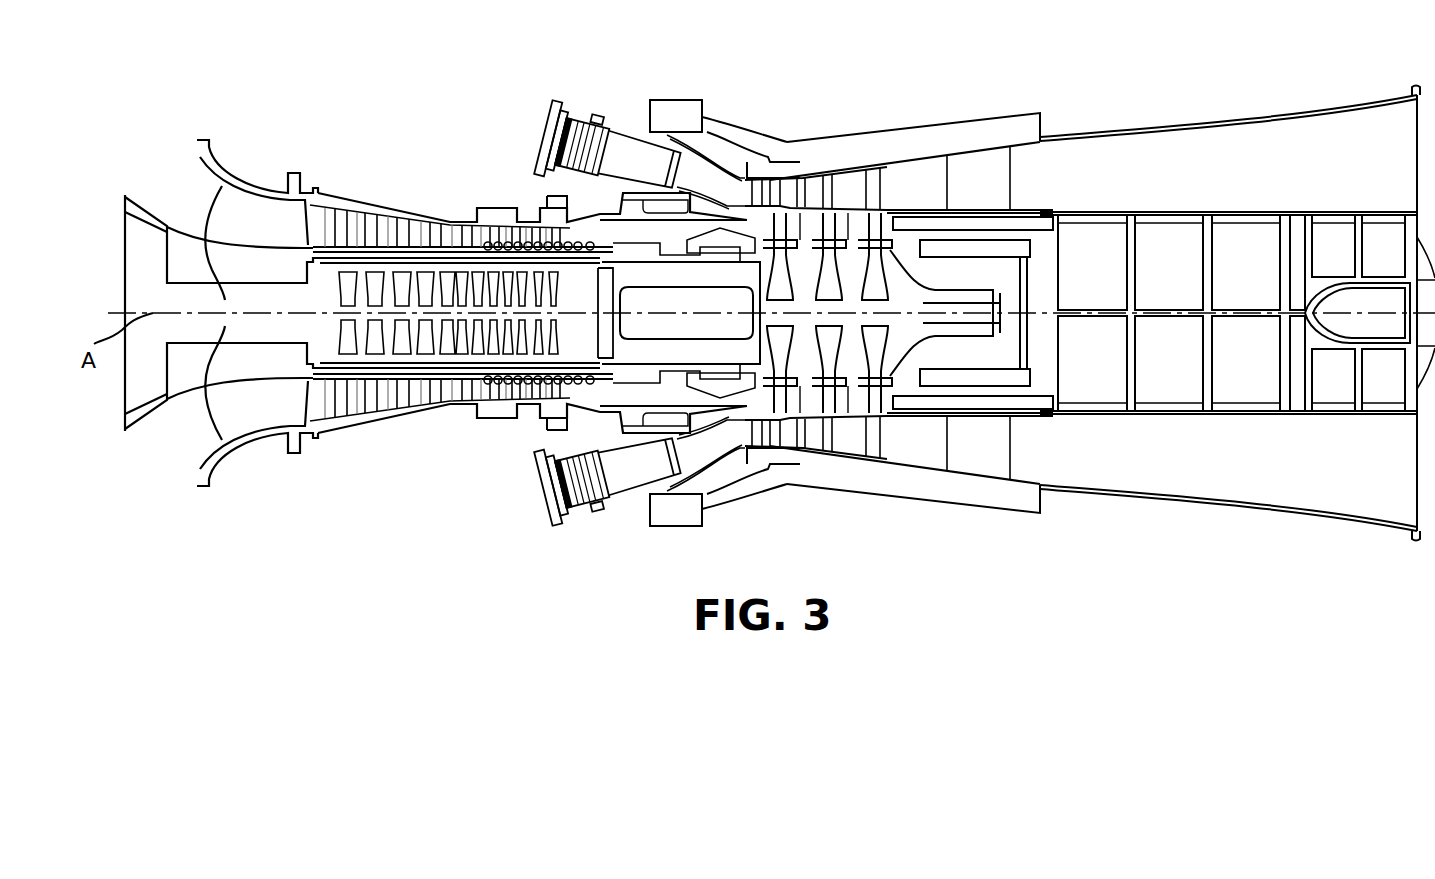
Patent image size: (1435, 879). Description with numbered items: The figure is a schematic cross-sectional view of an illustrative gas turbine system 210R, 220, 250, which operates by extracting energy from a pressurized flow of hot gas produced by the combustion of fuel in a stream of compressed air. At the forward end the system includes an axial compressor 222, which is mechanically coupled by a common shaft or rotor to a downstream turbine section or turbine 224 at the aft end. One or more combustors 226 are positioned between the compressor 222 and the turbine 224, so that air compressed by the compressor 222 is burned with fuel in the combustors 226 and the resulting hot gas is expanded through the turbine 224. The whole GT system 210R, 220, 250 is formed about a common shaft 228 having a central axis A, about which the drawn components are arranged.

The GT system 210R is at (1111, 278).
The GT system 220 is at (1111, 313).
The GT system 250 is at (976, 97).
The axial compressor 222 is at (402, 426).
The turbine 224 is at (871, 516).
The combustor 226 is at (597, 107).
The common shaft 228 is at (205, 236).